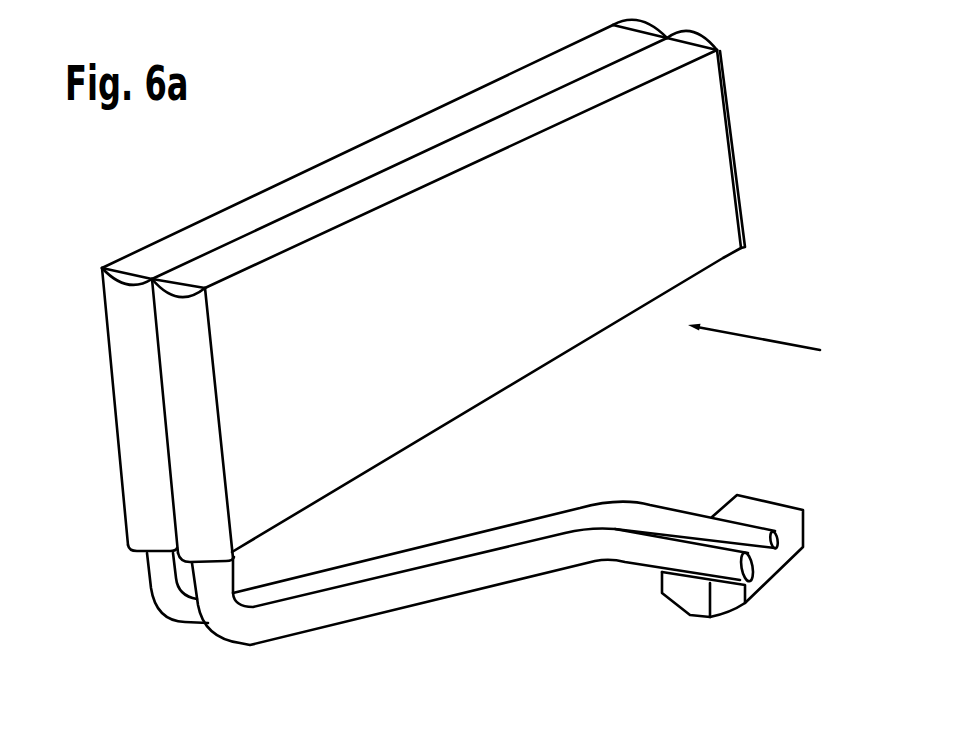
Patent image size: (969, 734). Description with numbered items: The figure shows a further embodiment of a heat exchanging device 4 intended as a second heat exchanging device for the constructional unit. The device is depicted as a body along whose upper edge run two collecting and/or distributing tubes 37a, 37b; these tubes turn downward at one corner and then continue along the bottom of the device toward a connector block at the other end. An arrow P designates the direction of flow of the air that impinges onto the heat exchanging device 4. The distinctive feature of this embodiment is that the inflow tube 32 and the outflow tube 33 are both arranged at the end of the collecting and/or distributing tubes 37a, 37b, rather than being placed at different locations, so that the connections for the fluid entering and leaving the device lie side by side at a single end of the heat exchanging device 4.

The heat exchanging device 4 is at (643, 373).
The collecting and/or distributing tube 37a is at (436, 347).
The collecting and/or distributing tube 37b is at (465, 353).
The inflow tube 32 is at (372, 573).
The outflow tube 33 is at (445, 585).
The direction of flow P is at (773, 340).